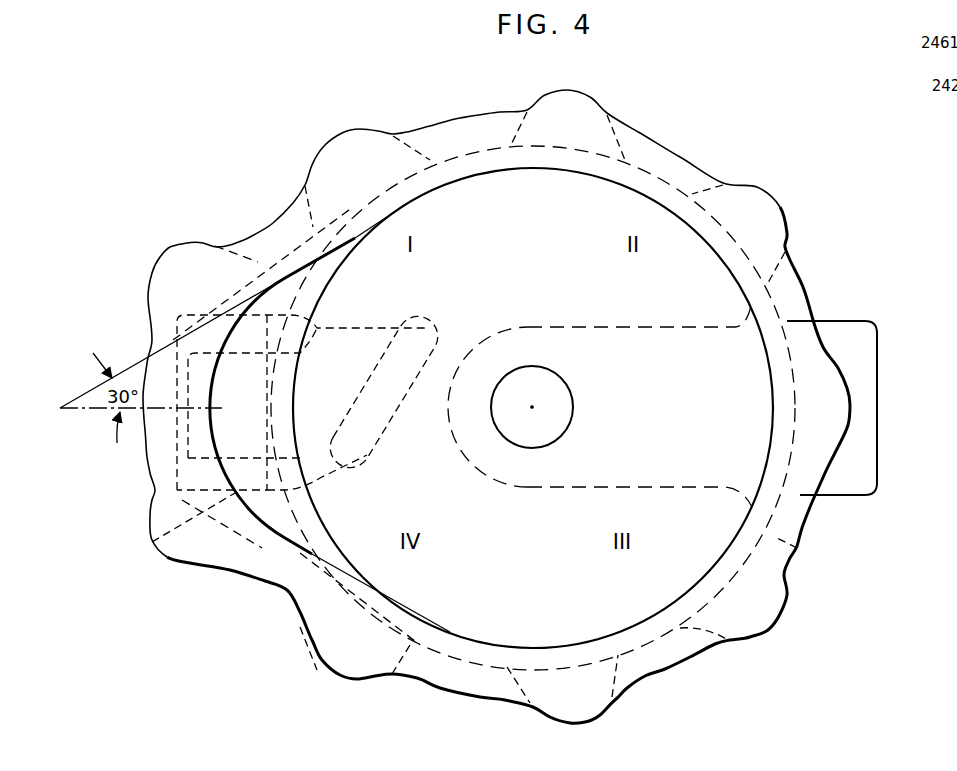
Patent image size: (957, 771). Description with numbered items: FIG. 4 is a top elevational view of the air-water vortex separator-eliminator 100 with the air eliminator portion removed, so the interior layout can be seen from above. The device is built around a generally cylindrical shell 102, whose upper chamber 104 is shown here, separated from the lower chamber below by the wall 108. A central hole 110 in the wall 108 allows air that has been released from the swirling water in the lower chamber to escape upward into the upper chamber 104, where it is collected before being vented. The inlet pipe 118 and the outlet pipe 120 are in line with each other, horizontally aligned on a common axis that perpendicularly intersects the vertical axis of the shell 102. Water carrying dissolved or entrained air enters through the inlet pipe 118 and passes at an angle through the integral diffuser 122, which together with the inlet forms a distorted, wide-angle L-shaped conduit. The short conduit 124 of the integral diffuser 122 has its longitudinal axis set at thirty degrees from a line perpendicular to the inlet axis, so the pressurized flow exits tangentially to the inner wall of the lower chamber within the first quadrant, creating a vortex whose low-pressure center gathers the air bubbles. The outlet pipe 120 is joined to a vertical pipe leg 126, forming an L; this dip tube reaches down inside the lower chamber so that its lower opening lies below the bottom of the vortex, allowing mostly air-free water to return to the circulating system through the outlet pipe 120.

The air-water vortex separator-eliminator 100 is at (665, 133).
The cylindrical shell 102 is at (413, 670).
The upper chamber 104 is at (628, 588).
The wall 108 is at (437, 208).
The central hole 110 is at (551, 403).
The inlet pipe 118 is at (157, 540).
The outlet pipe 120 is at (885, 412).
The integral diffuser 122 is at (367, 455).
The short conduit 124 is at (366, 341).
The vertical pipe leg 126 is at (680, 345).